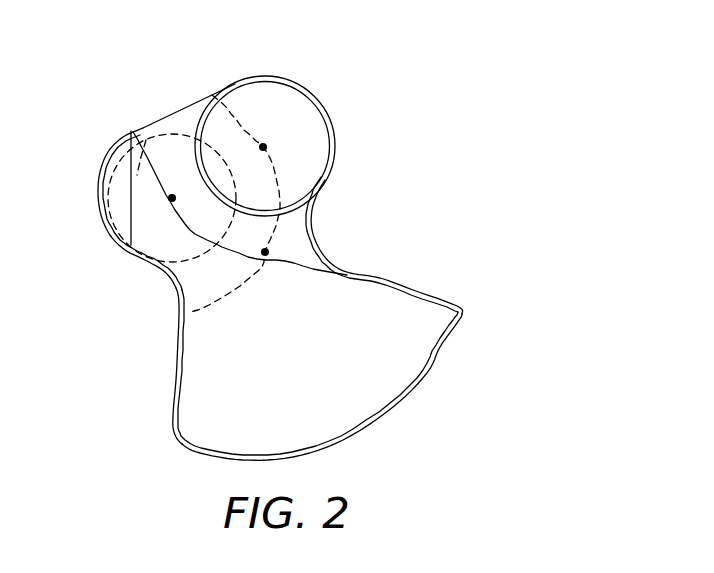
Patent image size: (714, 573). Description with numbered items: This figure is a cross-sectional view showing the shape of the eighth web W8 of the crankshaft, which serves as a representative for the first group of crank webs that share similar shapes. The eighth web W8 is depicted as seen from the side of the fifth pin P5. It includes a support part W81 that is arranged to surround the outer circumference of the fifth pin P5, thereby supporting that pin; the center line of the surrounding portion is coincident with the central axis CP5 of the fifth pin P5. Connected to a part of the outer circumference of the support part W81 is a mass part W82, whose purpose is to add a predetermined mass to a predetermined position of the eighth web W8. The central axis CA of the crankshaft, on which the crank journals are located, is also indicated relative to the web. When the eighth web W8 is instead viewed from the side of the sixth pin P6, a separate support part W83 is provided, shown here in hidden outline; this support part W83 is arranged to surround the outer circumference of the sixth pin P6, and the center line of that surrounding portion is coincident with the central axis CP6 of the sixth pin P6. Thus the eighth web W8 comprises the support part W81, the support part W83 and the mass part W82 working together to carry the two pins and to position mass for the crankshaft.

The eighth web W8 is at (432, 388).
The support part W81 is at (298, 224).
The mass part W82 is at (200, 355).
The support part W83 is at (195, 134).
The fifth pin P5 is at (310, 163).
The sixth pin P6 is at (150, 138).
The central axis of the fifth pin CP5 is at (263, 147).
The central axis of the sixth pin CP6 is at (172, 198).
The central axis of the crankshaft CA is at (347, 274).